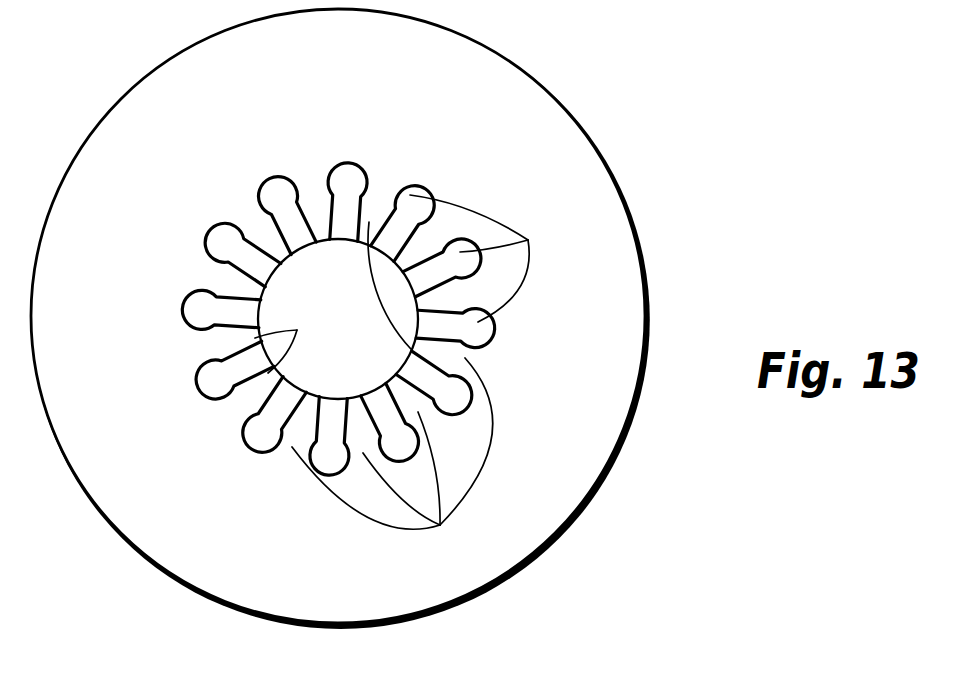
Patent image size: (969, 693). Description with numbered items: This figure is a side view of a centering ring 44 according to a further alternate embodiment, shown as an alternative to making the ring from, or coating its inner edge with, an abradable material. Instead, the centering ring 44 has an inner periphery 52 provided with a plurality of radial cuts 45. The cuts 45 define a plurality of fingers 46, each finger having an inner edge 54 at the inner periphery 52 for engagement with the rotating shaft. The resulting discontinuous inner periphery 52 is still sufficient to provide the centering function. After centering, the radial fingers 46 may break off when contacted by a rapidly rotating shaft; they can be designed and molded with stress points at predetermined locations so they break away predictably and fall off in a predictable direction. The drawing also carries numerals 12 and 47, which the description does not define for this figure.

The rotor assembly 12 is at (338, 319).
The centering ring 44 is at (580, 140).
The radial cuts 45 is at (468, 272).
The fingers 46 is at (392, 457).
The vane passage 47 is at (441, 297).
The inner periphery 52 is at (309, 244).
The inner edge 54 is at (293, 342).